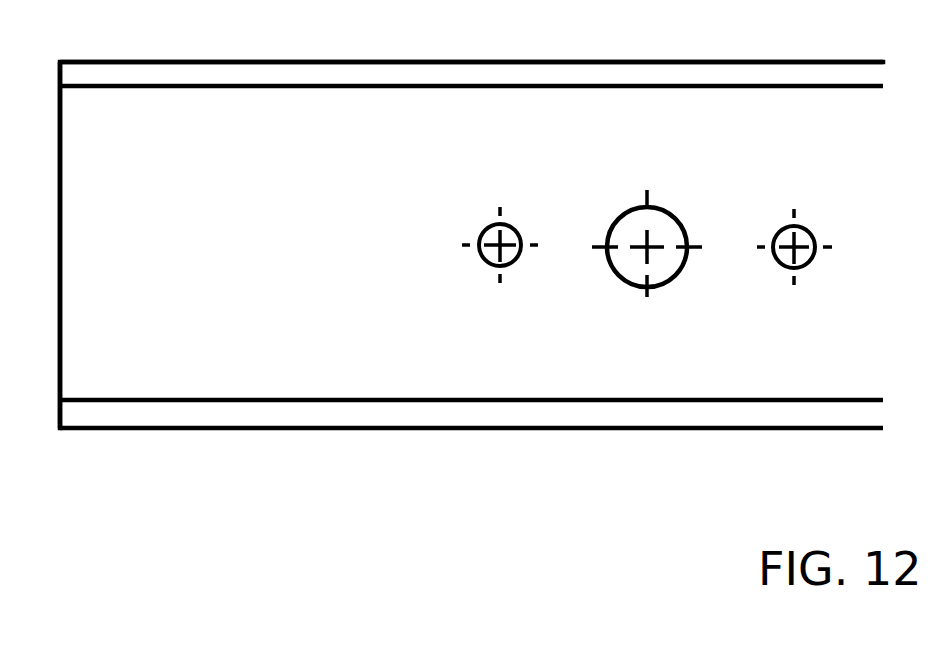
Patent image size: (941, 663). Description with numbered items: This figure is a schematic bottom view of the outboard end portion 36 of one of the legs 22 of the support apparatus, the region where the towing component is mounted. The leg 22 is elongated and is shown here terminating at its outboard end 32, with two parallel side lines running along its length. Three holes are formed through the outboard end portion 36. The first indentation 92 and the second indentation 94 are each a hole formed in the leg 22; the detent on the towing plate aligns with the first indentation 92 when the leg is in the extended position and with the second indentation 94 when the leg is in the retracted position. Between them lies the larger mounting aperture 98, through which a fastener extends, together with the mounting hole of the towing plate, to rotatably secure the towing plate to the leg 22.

The leg 22 is at (370, 61).
The outboard end portion 36 is at (727, 62).
The outboard end 32 is at (57, 380).
The first indentation 92 is at (512, 267).
The mounting aperture 98 is at (672, 280).
The second indentation 94 is at (810, 265).